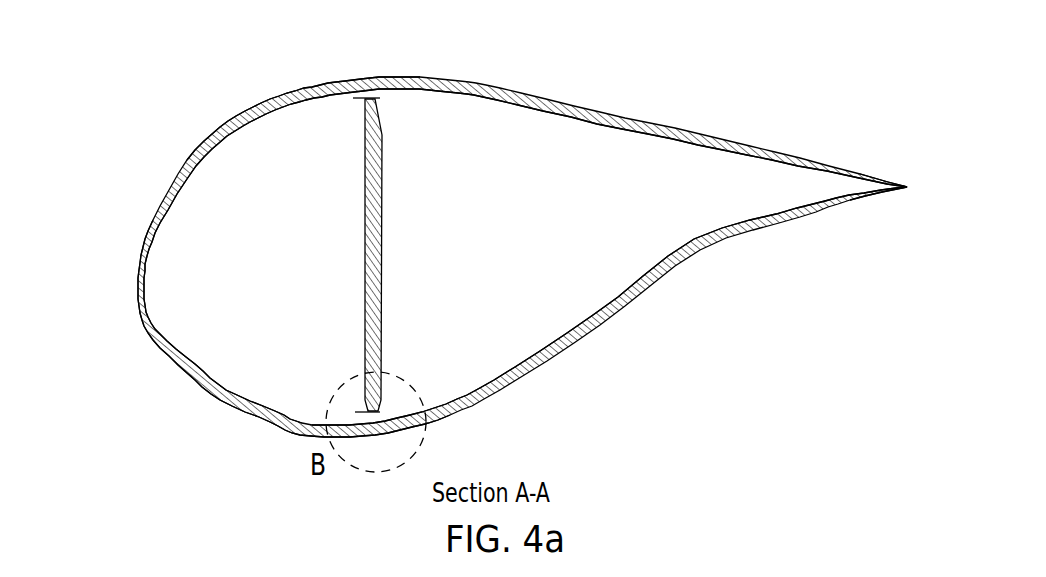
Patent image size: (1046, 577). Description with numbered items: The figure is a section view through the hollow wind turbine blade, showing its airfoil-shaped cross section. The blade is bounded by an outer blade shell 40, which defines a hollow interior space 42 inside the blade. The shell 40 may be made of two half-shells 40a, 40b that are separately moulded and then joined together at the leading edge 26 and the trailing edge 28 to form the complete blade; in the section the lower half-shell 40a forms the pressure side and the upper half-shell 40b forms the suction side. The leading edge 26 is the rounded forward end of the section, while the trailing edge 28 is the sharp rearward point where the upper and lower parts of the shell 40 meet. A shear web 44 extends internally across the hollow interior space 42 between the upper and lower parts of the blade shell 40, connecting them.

The leading edge 26 is at (140, 253).
The trailing edge 28 is at (907, 187).
The outer blade shell 40 is at (613, 112).
The half-shell 40a is at (237, 410).
The half-shell 40b is at (297, 88).
The hollow interior space 42 is at (525, 257).
The shear web 44 is at (383, 240).